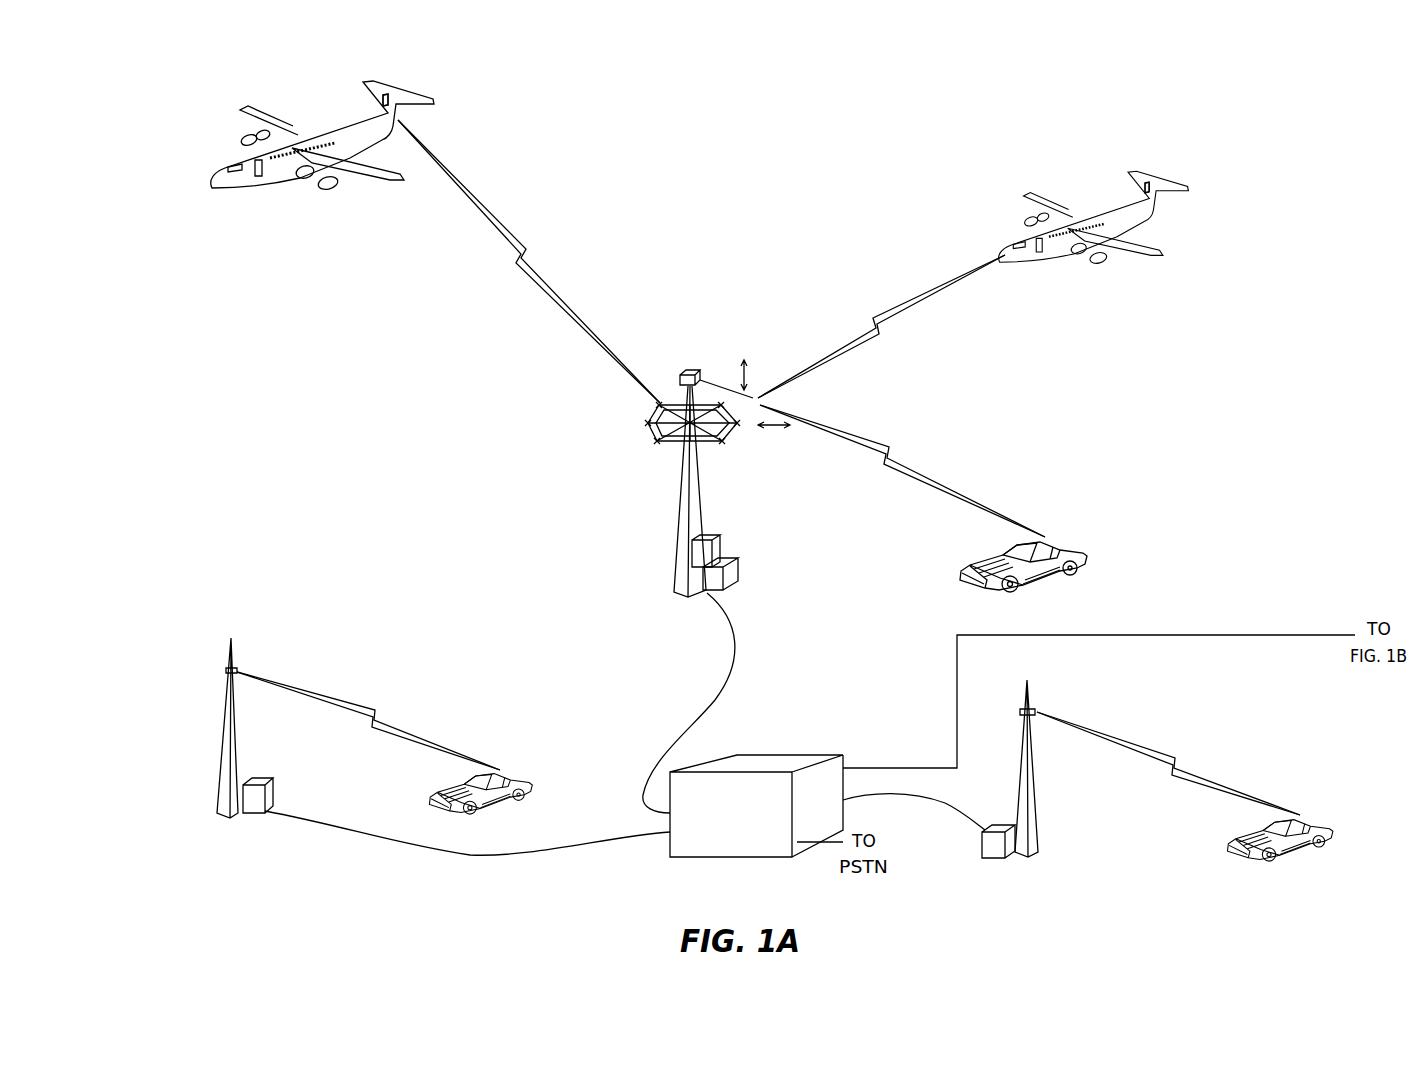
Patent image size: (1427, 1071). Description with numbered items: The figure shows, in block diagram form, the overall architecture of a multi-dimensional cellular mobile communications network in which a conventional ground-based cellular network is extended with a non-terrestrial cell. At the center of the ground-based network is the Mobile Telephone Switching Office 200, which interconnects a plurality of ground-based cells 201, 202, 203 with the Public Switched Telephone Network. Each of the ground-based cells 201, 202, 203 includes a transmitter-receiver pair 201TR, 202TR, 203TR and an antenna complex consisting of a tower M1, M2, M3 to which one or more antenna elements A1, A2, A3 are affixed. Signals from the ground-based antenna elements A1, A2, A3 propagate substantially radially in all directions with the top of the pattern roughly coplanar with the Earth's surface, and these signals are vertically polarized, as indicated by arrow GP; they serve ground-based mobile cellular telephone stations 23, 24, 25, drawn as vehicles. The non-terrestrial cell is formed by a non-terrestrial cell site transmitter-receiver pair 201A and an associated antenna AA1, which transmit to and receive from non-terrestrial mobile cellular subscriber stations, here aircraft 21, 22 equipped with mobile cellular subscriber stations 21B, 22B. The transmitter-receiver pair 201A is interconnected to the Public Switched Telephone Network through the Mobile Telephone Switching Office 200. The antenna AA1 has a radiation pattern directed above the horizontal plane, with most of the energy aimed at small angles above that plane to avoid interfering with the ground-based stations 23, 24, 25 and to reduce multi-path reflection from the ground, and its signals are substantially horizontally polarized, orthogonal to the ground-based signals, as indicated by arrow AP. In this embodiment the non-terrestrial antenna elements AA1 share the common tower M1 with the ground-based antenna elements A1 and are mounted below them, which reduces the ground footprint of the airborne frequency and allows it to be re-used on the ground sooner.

The aircraft 21 is at (245, 178).
The mobile cellular subscriber station 21B is at (396, 108).
The aircraft 22 is at (1020, 262).
The mobile cellular subscriber station 22B is at (1158, 198).
The ground-based mobile cellular telephone station 23 is at (1045, 540).
The ground-based mobile cellular telephone station 24 is at (500, 770).
The ground-based mobile cellular telephone station 25 is at (1300, 815).
The antenna element A1 is at (690, 370).
The non-terrestrial cell site antenna AA1 is at (650, 432).
The arrow indicating vertical polarization GP is at (740, 379).
The arrow indicating horizontal polarization AP is at (774, 439).
The tower M1 is at (698, 478).
The ground-based cell 201 is at (695, 449).
The non-terrestrial cell site transmitter-receiver pair 201A is at (716, 548).
The transmitter-receiver pair 201TR is at (738, 574).
The Mobile Telephone Switching Office 200 is at (812, 760).
The antenna element A2 is at (226, 670).
The tower M2 is at (238, 730).
The ground-based cell 202 is at (249, 728).
The transmitter-receiver pair 202TR is at (273, 795).
The antenna element A3 is at (1037, 712).
The tower M3 is at (1038, 768).
The ground-based cell 203 is at (1053, 790).
The transmitter-receiver pair 203TR is at (988, 852).